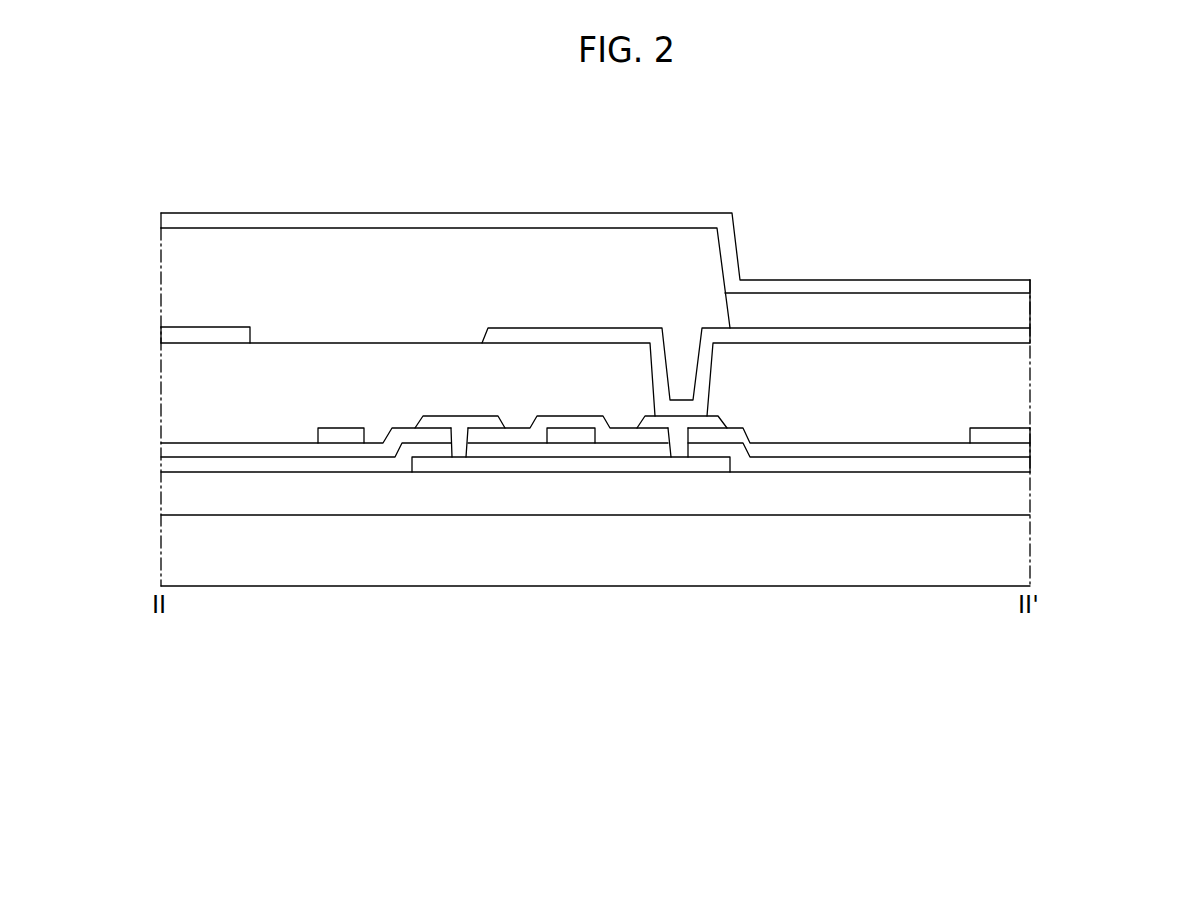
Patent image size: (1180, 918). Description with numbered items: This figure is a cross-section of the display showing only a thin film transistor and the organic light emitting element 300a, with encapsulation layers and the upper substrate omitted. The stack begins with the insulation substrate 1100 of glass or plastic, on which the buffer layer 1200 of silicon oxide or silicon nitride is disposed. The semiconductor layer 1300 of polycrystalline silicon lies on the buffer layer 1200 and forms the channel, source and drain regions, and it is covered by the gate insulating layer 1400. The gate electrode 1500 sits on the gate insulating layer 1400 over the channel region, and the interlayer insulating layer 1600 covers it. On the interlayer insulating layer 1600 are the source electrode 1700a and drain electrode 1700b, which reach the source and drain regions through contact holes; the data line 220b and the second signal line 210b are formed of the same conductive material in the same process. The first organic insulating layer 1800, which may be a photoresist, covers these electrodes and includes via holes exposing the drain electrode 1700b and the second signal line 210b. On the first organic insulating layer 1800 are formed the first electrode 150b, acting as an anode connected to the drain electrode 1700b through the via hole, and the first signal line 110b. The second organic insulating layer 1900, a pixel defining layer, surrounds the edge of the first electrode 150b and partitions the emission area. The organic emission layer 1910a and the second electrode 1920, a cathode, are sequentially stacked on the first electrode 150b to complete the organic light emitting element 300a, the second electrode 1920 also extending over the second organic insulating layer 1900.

The insulation substrate 1100 is at (1016, 553).
The buffer layer 1200 is at (1016, 505).
The semiconductor layer 1300 is at (507, 468).
The gate insulating layer 1400 is at (1015, 466).
The gate electrode 1500 is at (583, 440).
The interlayer insulating layer 1600 is at (1016, 450).
The source electrode 1700a is at (434, 422).
The drain electrode 1700b is at (708, 424).
The data line 220b is at (318, 437).
The second signal line 210b is at (1015, 437).
The first organic insulating layer 1800 is at (172, 381).
The first signal line 110b is at (172, 335).
The first electrode 150b is at (1015, 336).
The second organic insulating layer 1900 is at (172, 272).
The organic emission layer 1910a is at (1018, 312).
The second electrode 1920 is at (1015, 290).
The organic light emitting element 300a is at (1111, 254).